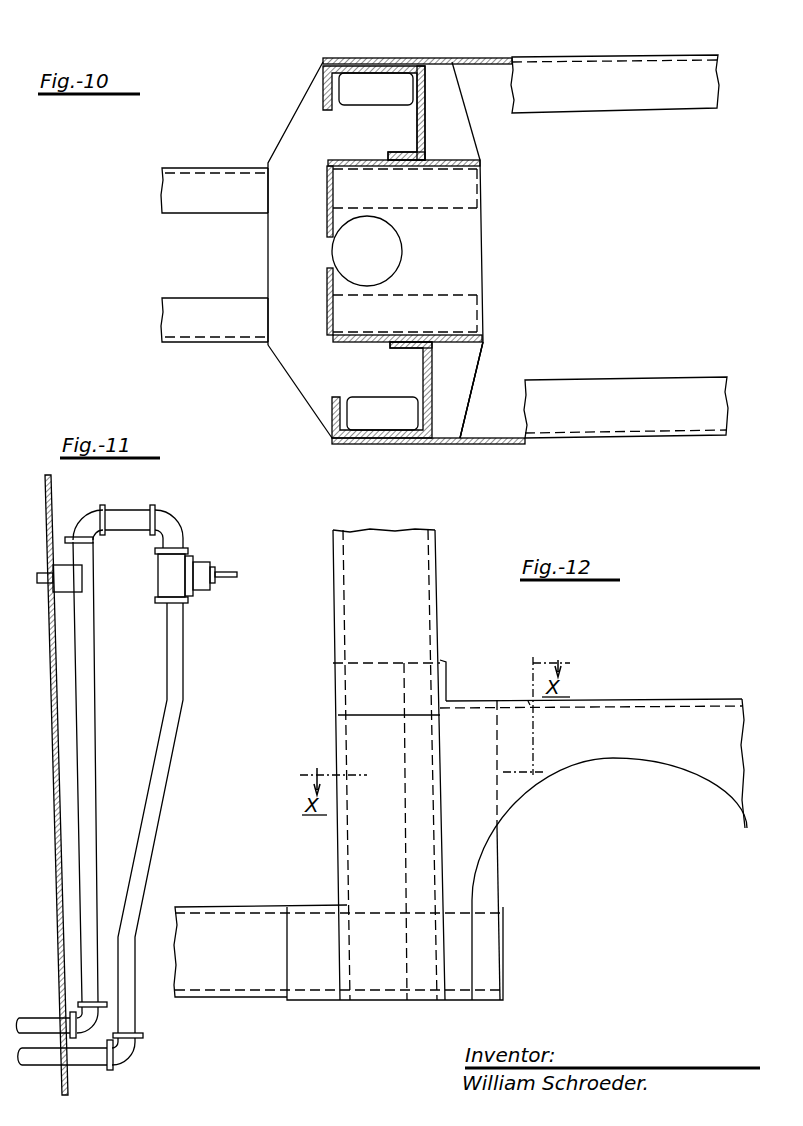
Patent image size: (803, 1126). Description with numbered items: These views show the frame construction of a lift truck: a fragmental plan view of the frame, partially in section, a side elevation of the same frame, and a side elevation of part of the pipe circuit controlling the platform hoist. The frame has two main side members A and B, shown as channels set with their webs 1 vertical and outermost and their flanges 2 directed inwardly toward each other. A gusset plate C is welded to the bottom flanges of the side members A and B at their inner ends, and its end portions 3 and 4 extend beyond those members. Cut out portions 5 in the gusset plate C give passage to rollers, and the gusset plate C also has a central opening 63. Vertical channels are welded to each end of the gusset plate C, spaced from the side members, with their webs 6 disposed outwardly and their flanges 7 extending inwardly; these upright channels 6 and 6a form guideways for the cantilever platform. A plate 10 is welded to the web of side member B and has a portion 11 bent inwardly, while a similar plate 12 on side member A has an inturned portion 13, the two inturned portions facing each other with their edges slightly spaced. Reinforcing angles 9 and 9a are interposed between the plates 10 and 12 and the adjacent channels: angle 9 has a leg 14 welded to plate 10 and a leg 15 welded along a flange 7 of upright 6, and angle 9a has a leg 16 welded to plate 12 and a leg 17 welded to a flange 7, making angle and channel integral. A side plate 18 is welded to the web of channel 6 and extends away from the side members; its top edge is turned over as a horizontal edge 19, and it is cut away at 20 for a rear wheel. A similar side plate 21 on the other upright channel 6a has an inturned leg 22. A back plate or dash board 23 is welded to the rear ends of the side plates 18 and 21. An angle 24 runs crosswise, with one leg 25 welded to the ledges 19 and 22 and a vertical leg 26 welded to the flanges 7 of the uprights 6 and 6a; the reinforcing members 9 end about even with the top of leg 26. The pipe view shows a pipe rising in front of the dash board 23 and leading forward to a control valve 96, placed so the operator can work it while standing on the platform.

In FIG. 12, the web 1 is at (237, 977).
In FIG. 10, the flange 2 is at (218, 203).
In FIG. 10, the end portion 3 is at (310, 383).
In FIG. 10, the end portion 4 is at (300, 112).
In FIG. 10, the cut out portion 5 is at (370, 99).
In FIG. 10, the upright channel 6 is at (334, 444).
In FIG. 12, the upright channel 6 is at (413, 602).
In FIG. 10, the upright channel 6a is at (380, 62).
In FIG. 10, the flange 7 is at (418, 112).
In FIG. 10, the reinforcing member 9 is at (481, 347).
In FIG. 10, the angle 9a is at (418, 148).
In FIG. 10, the plate 10 is at (372, 343).
In FIG. 10, the inturned portion 11 is at (328, 308).
In FIG. 10, the plate 12 is at (452, 158).
In FIG. 10, the inturned portion 13 is at (327, 222).
In FIG. 10, the leg 14 is at (392, 350).
In FIG. 10, the leg 15 is at (430, 384).
In FIG. 10, the leg 16 is at (390, 147).
In FIG. 10, the leg 17 is at (436, 110).
In FIG. 10, the side plate 18 is at (470, 441).
In FIG. 12, the side plate 18 is at (562, 762).
In FIG. 10, the horizontal edge 19 is at (627, 392).
In FIG. 12, the cut away portion 20 is at (621, 849).
In FIG. 10, the side plate 21 is at (483, 58).
In FIG. 10, the inturned leg 22 is at (685, 100).
In FIG. 11, the back plate 23 is at (53, 738).
In FIG. 12, the angle 24 is at (452, 695).
In FIG. 12, the leg 25 is at (498, 703).
In FIG. 12, the vertical leg 26 is at (445, 665).
In FIG. 10, the opening 63 is at (386, 245).
In FIG. 11, the control valve 96 is at (160, 773).
In FIG. 10, the main side member A is at (233, 173).
In FIG. 10, the main side member B is at (198, 343).
In FIG. 10, the gusset plate C is at (463, 422).